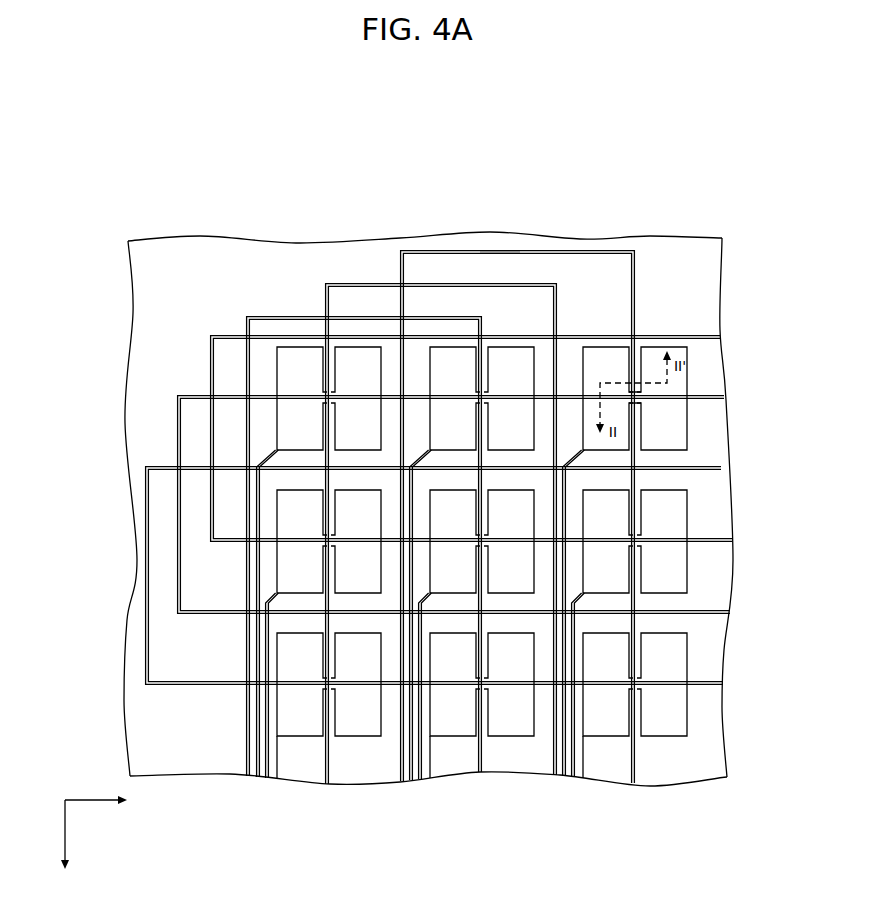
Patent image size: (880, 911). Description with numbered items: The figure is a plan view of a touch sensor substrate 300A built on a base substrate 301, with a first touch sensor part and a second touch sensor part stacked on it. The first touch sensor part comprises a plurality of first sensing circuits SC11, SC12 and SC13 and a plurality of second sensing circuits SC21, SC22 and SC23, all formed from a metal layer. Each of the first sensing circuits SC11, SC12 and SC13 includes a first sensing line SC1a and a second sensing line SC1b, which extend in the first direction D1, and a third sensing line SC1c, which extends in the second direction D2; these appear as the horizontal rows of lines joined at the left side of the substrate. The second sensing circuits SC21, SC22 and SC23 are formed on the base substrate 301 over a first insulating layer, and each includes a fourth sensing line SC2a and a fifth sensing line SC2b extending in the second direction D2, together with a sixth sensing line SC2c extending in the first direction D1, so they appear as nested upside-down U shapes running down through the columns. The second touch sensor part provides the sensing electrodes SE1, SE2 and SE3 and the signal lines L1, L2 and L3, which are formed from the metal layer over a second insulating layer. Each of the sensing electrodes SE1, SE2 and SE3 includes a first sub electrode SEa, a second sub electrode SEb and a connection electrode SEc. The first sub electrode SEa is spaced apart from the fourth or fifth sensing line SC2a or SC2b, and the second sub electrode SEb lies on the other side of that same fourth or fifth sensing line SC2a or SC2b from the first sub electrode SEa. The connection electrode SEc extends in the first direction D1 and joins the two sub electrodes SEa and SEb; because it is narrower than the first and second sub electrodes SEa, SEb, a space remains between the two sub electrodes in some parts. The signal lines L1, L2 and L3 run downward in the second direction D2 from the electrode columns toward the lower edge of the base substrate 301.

The touch sensor substrate 300A is at (633, 147).
The base substrate 301 is at (191, 271).
The first sensing circuit SC11 is at (367, 439).
The first sensing line SC1a is at (232, 397).
The second sensing line SC1b is at (395, 510).
The third sensing line SC1c is at (178, 432).
The first sensing circuit SC12 is at (180, 585).
The first sensing circuit SC13 is at (148, 647).
The second sensing circuit SC21 is at (308, 318).
The second sensing circuit SC22 is at (370, 285).
The second sensing circuit SC23 is at (520, 471).
The fourth sensing line SC2a is at (406, 268).
The fifth sensing line SC2b is at (599, 489).
The sixth sensing line SC2c is at (503, 252).
The sensing electrode SE1 is at (284, 356).
The sensing electrode SE2 is at (520, 360).
The sensing electrode SE3 is at (676, 304).
The first sub electrode SEa is at (610, 350).
The second sub electrode SEb is at (681, 350).
The connection electrode SEc is at (646, 350).
The signal line L1 is at (258, 762).
The signal line L2 is at (412, 762).
The signal line L3 is at (565, 762).
The first direction D1 is at (115, 799).
The second direction D2 is at (64, 846).